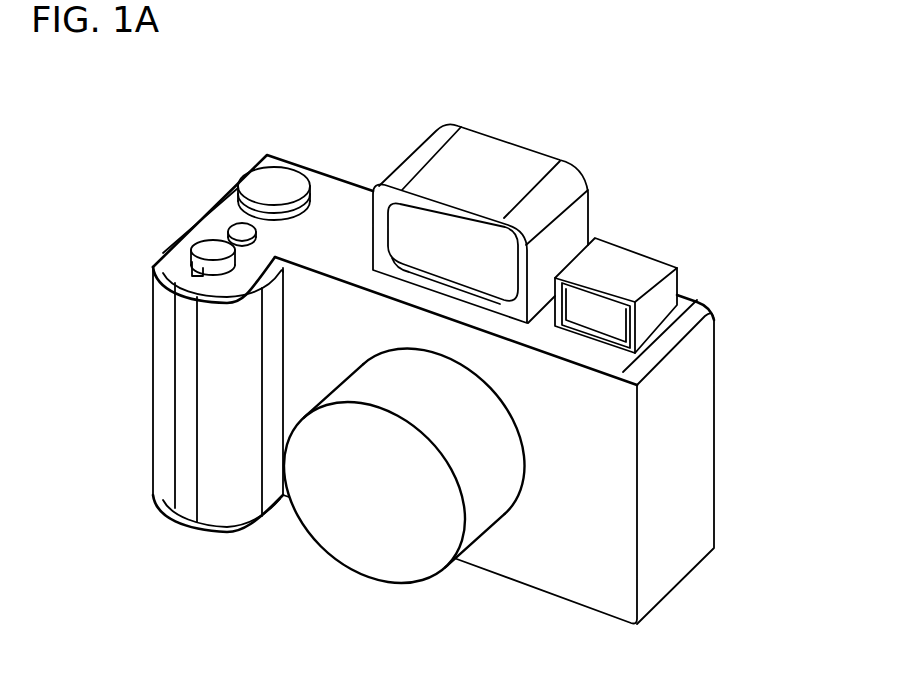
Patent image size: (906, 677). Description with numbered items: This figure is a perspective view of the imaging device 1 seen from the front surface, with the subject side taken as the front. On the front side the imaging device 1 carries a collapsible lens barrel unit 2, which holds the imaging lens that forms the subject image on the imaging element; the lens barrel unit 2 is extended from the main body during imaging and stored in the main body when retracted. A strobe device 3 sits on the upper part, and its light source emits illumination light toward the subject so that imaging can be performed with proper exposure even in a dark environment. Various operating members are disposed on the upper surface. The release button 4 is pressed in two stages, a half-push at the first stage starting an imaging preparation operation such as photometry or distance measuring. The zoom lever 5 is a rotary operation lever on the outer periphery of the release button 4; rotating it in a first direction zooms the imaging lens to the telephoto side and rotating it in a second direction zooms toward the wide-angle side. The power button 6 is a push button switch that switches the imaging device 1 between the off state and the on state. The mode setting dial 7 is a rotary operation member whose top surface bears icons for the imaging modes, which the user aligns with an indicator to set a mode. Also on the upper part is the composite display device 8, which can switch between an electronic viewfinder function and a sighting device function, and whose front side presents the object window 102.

The imaging device 1 is at (736, 405).
The lens barrel unit 2 is at (348, 555).
The strobe device 3 is at (633, 265).
The release button 4 is at (204, 246).
The zoom lever 5 is at (166, 277).
The power button 6 is at (238, 230).
The mode setting dial 7 is at (258, 177).
The composite display device 8 is at (530, 160).
The object window 102 is at (410, 217).